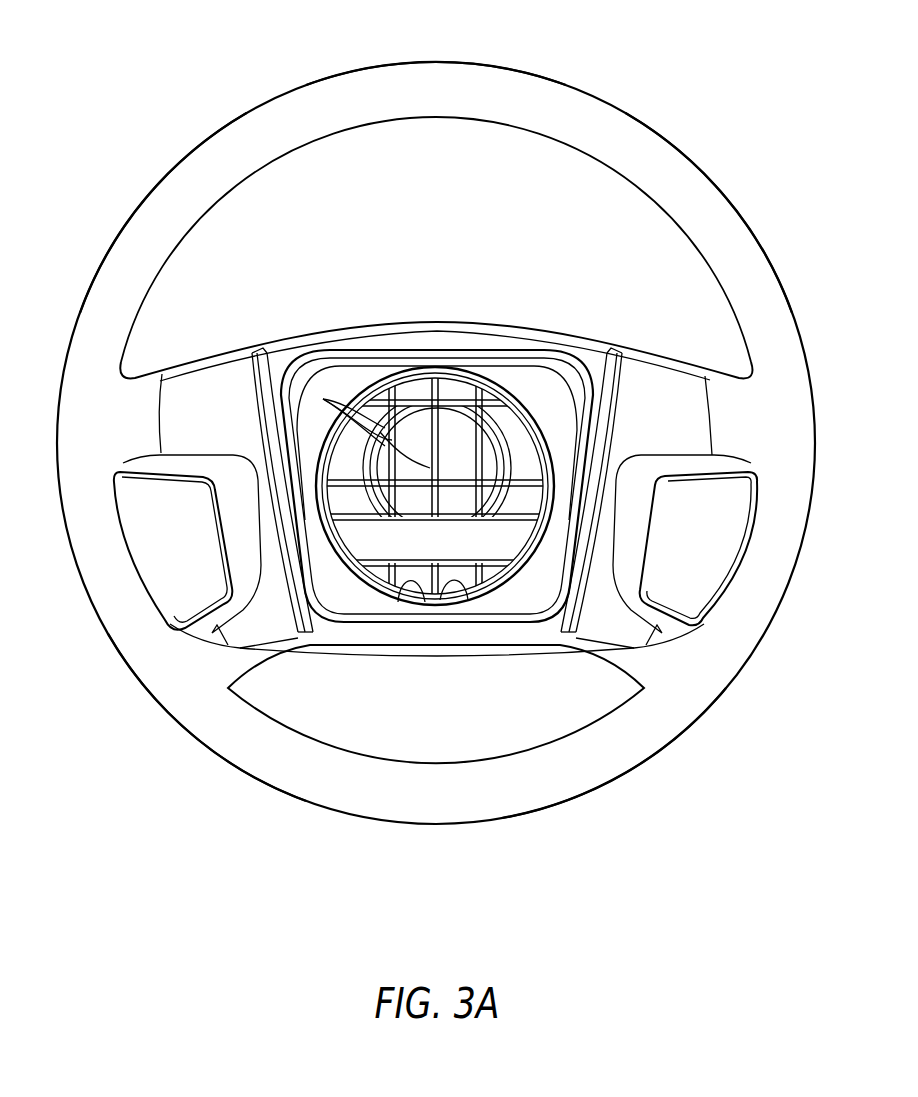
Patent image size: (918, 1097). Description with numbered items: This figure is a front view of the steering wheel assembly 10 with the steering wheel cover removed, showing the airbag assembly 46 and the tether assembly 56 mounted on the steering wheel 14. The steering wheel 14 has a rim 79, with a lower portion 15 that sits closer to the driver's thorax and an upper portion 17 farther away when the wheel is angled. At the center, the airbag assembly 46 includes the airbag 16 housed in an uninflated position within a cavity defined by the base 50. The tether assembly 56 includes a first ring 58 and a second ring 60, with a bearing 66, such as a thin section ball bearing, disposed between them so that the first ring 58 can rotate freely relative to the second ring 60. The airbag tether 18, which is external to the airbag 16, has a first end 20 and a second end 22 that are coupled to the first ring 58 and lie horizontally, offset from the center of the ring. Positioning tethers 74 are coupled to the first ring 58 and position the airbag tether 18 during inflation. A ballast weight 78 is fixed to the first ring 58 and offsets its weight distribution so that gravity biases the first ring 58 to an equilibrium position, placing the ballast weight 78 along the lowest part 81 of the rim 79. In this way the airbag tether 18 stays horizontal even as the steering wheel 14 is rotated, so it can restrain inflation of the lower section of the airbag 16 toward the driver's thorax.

The steering wheel assembly 10 is at (126, 90).
The steering wheel 14 is at (679, 146).
The lower portion 15 is at (214, 768).
The airbag 16 is at (415, 437).
The upper portion 17 is at (99, 262).
The airbag tether 18 is at (380, 540).
The first end 20 is at (338, 560).
The second end 22 is at (513, 543).
The airbag assembly 46 is at (505, 430).
The base 50 is at (535, 452).
The tether assembly 56 is at (512, 378).
The first ring 58 is at (428, 370).
The second ring 60 is at (367, 387).
The bearing 66 is at (516, 590).
The positioning tether 74 is at (372, 690).
The ballast weight 78 is at (455, 592).
The rim 79 is at (470, 77).
The lowest part 81 is at (489, 828).